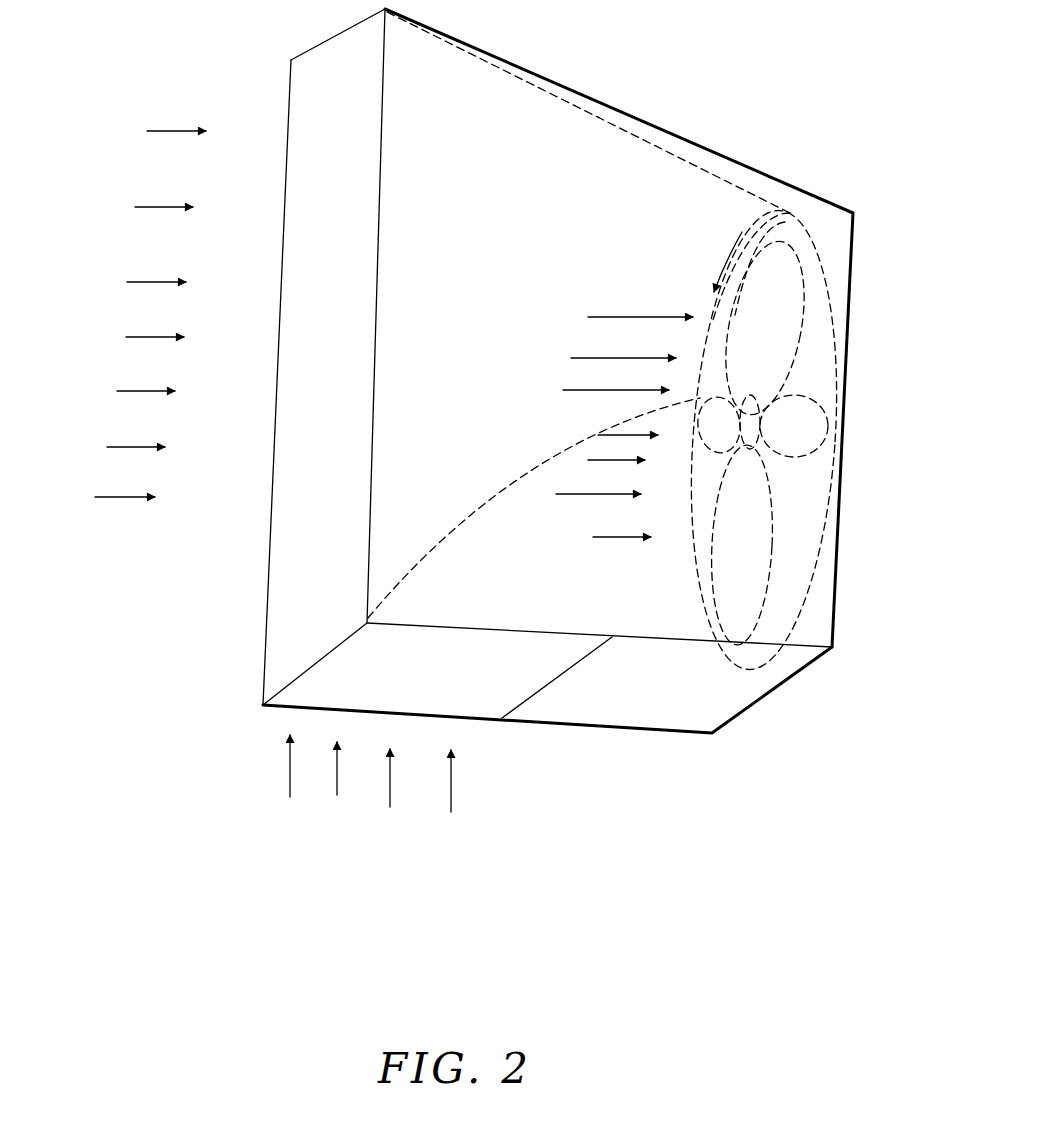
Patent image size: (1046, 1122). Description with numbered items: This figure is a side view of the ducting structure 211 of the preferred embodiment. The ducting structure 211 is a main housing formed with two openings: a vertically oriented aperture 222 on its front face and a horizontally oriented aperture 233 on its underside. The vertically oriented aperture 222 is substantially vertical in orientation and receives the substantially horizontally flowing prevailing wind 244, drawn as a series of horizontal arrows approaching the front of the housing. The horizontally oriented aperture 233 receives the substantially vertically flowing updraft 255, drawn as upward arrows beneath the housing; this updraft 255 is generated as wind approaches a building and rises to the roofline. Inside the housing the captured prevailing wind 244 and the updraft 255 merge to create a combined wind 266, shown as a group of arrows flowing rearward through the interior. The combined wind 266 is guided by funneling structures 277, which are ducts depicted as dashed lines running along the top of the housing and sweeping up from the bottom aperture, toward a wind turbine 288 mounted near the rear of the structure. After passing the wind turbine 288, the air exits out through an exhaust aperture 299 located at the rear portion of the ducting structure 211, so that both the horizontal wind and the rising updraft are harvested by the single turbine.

The ducting structure 211 is at (590, 94).
The vertically oriented aperture 222 is at (360, 200).
The horizontally oriented aperture 233 is at (455, 666).
The prevailing wind 244 is at (145, 337).
The updraft 255 is at (337, 795).
The combined wind 266 is at (610, 317).
The funneling structures 277 is at (652, 143).
The wind turbine 288 is at (765, 363).
The exhaust aperture 299 is at (812, 348).